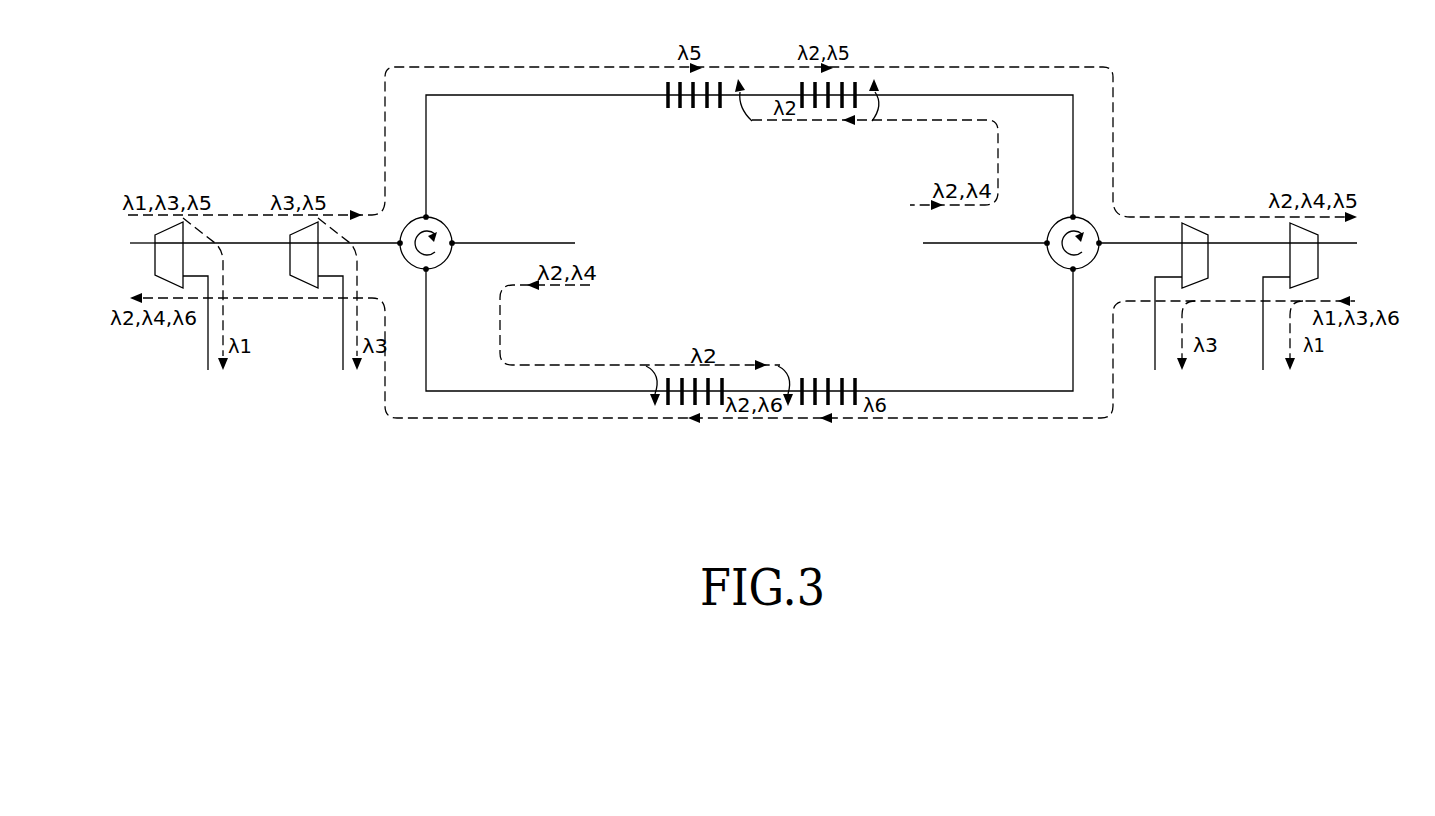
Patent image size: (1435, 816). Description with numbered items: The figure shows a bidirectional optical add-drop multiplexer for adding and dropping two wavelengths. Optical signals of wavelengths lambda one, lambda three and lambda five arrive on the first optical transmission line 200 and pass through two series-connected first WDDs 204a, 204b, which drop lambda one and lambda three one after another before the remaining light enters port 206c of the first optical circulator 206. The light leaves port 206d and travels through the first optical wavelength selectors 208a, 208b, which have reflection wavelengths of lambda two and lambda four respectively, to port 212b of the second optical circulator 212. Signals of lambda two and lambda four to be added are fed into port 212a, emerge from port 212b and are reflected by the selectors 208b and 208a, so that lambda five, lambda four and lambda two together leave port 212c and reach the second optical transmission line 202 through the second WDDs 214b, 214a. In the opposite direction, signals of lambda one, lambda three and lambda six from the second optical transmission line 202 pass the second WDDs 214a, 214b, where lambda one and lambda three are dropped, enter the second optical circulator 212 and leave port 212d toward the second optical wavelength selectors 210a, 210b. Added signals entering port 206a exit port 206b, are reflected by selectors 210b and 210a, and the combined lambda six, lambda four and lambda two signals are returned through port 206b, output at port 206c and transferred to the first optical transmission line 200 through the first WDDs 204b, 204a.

The first optical transmission line 200 is at (140, 241).
The second optical transmission line 202 is at (1340, 242).
The first WDD 204a is at (155, 256).
The first WDD 204b is at (290, 256).
The first optical circulator 206 is at (446, 232).
The port of the first optical circulator 206a is at (452, 243).
The port of the first optical circulator 206b is at (426, 269).
The port of the first optical circulator 206c is at (399, 243).
The port of the first optical circulator 206d is at (427, 217).
The first optical wavelength selector 208a is at (692, 115).
The first optical wavelength selector 208b is at (827, 115).
The second optical wavelength selector 210a is at (807, 412).
The second optical wavelength selector 210b is at (672, 412).
The second optical circulator 212 is at (1090, 265).
The port of the second optical circulator 212a is at (1047, 243).
The port of the second optical circulator 212b is at (1073, 217).
The port of the second optical circulator 212c is at (1096, 232).
The port of the second optical circulator 212d is at (1073, 269).
The second WDD 214a is at (1318, 257).
The second WDD 214b is at (1208, 257).